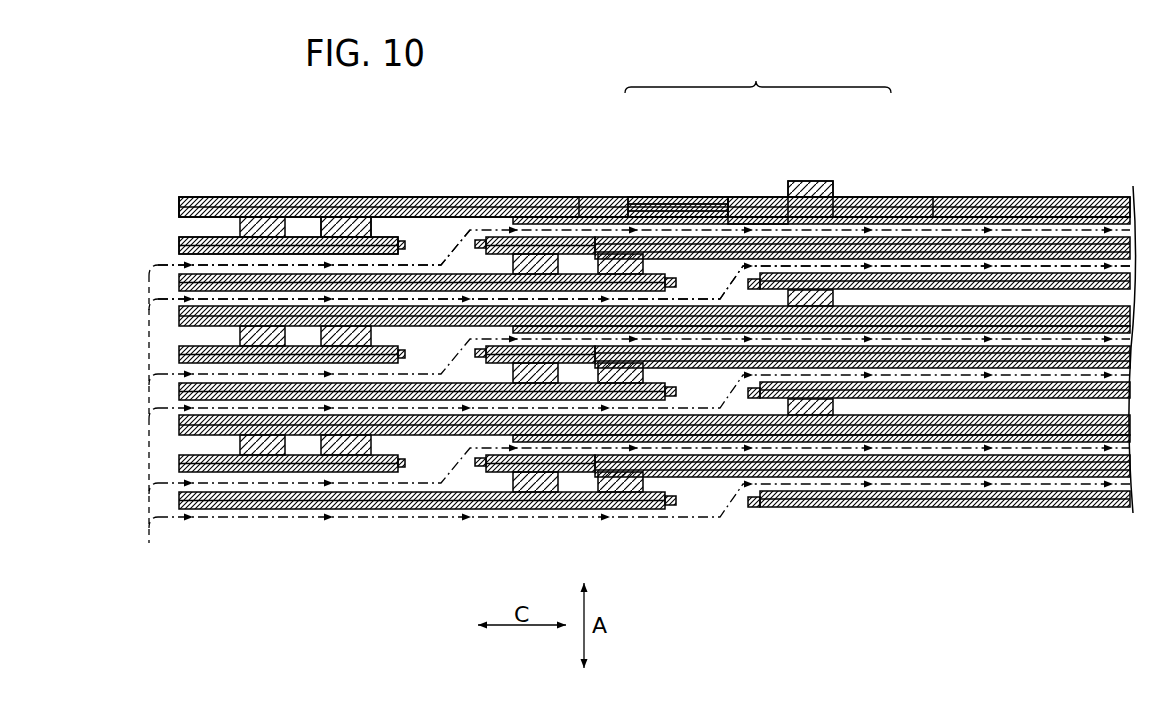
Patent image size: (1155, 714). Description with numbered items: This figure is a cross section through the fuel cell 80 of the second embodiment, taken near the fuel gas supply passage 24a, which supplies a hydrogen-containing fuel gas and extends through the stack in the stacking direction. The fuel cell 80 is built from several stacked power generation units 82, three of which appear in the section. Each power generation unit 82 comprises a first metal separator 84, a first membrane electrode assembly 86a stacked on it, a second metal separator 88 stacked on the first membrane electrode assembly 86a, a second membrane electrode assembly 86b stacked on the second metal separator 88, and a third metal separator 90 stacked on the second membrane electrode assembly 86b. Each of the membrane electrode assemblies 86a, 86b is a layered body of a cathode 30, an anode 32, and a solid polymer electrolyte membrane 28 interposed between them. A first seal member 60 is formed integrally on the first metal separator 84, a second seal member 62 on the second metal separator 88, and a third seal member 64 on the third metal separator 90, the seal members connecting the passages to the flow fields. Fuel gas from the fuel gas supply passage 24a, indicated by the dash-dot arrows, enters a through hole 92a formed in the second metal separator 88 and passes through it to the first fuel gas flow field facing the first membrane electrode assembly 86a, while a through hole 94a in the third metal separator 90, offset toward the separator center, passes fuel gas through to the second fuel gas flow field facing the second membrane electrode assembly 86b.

The fuel cell 80 is at (571, 96).
The power generation unit 82 is at (758, 73).
The first metal separator 84 is at (572, 165).
The first membrane electrode assembly 86a is at (718, 128).
The second membrane electrode assembly 86b is at (910, 128).
The second metal separator 88 is at (761, 207).
The third metal separator 90 is at (807, 173).
The solid polymer electrolyte membrane 28 is at (666, 189).
The cathode 30 is at (628, 189).
The anode 32 is at (701, 189).
The first seal member 60 is at (200, 189).
The second seal member 62 is at (302, 228).
The third seal member 64 is at (345, 262).
The through hole 92a is at (414, 235).
The through hole 94a is at (698, 273).
The fuel gas supply passage 24a is at (104, 392).